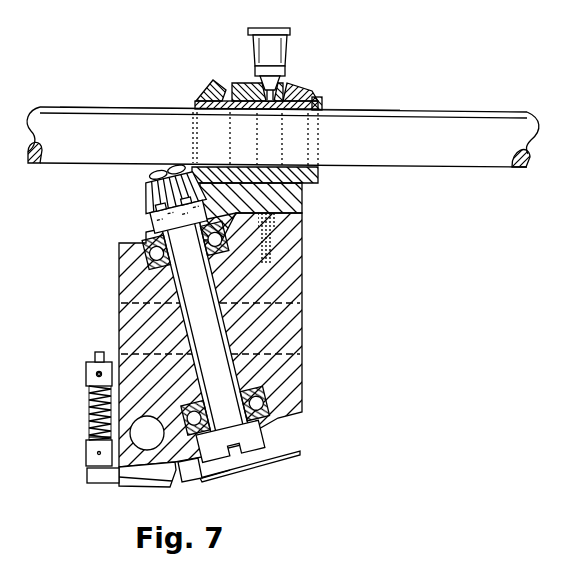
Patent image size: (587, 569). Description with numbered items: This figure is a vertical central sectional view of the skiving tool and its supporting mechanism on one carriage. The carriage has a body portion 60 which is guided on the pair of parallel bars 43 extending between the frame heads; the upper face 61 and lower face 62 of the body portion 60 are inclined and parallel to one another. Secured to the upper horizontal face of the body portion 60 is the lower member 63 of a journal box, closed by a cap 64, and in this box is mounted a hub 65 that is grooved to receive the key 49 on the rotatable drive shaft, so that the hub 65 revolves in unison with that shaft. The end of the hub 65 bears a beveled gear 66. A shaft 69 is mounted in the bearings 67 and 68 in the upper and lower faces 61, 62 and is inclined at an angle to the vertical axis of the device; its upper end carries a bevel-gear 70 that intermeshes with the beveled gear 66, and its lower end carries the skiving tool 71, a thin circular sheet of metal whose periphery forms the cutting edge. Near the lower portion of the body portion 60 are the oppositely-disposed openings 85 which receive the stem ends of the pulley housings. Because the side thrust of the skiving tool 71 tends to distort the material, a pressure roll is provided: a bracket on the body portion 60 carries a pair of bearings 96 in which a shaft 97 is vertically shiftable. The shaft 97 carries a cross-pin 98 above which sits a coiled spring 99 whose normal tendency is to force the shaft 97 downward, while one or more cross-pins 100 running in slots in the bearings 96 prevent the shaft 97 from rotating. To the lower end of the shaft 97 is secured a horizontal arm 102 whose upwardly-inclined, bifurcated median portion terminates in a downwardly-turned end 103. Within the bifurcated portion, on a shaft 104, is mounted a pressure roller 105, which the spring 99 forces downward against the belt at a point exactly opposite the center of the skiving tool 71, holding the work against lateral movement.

The bars 43 is at (283, 137).
The key 49 is at (109, 109).
The body portion of the carriage 60 is at (303, 258).
The upper face 61 is at (122, 236).
The lower face 62 is at (297, 420).
The lower member of journal box 63 is at (306, 208).
The cap 64 is at (300, 90).
The hub 65 is at (322, 101).
The beveled gear 66 is at (208, 91).
The bearing 67 is at (143, 228).
The bearing 68 is at (282, 438).
The shaft 69 is at (210, 323).
The bevel-gear 70 is at (148, 192).
The skiving tool 71 is at (263, 462).
The openings 85 is at (147, 433).
The bearings 96 is at (86, 372).
The shaft 97 is at (100, 355).
The cross-pin 98 is at (90, 438).
The coiled spring 99 is at (90, 400).
The cross-pins 100 is at (97, 373).
The horizontal arm 102 is at (88, 478).
The downwardly-turned end 103 is at (190, 479).
The shaft 104 is at (224, 486).
The pressure roller 105 is at (146, 485).